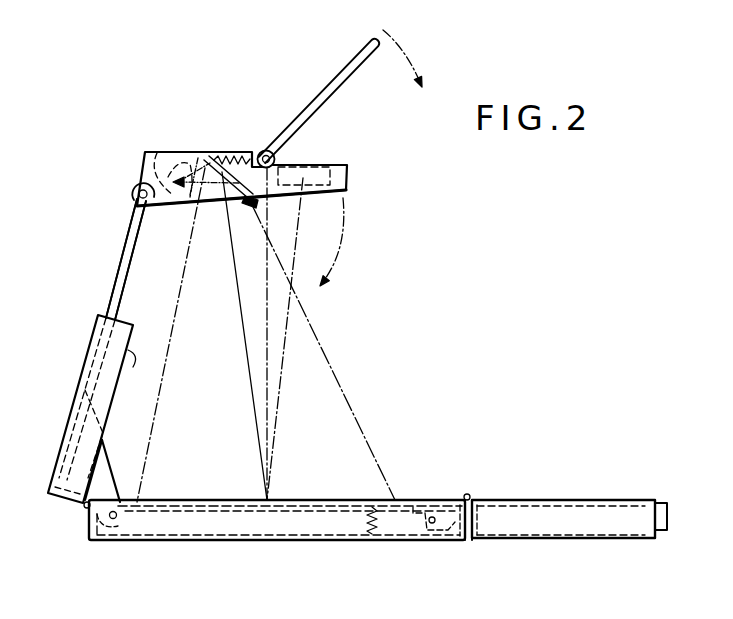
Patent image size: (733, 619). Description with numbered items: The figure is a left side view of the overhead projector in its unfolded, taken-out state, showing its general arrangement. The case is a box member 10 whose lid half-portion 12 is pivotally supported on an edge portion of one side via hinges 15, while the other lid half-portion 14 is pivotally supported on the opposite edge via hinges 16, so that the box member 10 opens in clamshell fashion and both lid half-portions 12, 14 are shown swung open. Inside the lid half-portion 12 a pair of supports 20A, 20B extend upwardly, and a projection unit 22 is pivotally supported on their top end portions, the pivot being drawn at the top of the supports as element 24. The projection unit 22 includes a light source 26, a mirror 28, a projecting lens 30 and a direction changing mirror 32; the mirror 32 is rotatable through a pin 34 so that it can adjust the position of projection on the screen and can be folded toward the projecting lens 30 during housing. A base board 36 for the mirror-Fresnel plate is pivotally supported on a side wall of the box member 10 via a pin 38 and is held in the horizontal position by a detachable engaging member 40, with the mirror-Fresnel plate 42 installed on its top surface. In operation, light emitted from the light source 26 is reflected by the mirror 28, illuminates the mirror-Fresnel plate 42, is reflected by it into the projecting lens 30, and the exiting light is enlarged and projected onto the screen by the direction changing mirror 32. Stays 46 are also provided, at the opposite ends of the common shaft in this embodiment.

The box member 10 is at (296, 548).
The lid half-portion 12 is at (78, 390).
The lid half-portion 14 is at (583, 539).
The hinge 15 is at (84, 507).
The hinge 16 is at (467, 494).
The support 20A is at (119, 245).
The support 20B is at (91, 259).
The projection unit 22 is at (196, 142).
The pivot pin 24 is at (133, 192).
The light source 26 is at (152, 147).
The mirror 28 is at (214, 150).
The projecting lens 30 is at (318, 164).
The direction changing mirror 32 is at (348, 80).
The pin 34 is at (267, 150).
The base board 36 is at (208, 512).
The pin 38 is at (113, 521).
The detachable engaging member 40 is at (445, 537).
The mirror-Fresnel plate 42 is at (192, 502).
The stay 46 is at (108, 463).